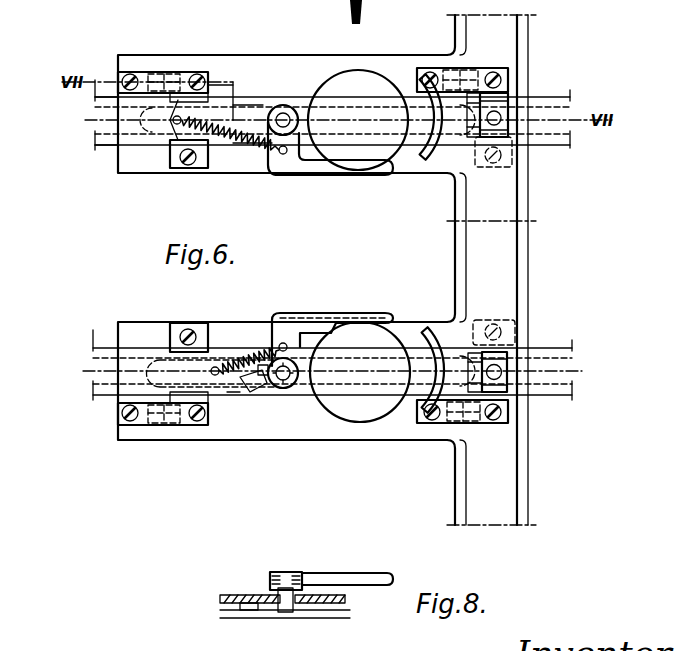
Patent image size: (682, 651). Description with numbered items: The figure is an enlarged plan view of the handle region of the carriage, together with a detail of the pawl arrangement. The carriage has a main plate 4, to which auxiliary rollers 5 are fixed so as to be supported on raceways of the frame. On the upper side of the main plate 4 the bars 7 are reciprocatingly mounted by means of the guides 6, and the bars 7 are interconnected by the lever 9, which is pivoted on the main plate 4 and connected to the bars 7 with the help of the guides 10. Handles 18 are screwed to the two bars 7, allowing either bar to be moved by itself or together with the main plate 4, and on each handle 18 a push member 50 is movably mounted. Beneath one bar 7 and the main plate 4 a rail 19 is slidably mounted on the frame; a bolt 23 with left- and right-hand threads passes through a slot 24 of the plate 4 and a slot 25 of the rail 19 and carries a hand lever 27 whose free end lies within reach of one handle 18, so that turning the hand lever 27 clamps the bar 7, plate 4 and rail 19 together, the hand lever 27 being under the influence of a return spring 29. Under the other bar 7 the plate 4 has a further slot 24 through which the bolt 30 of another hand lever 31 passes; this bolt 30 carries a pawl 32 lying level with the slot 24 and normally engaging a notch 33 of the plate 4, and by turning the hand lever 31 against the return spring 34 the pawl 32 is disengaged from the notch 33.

In FIG. 6, the main plate 4 is at (142, 171).
In FIG. 6, the auxiliary rollers 5 is at (171, 80).
In FIG. 6, the guides 6 is at (537, 317).
In FIG. 6, the bars 7 is at (546, 97).
In FIG. 8, the bars 7 is at (232, 595).
In FIG. 6, the lever 9 is at (514, 197).
In FIG. 6, the guides 10 is at (475, 127).
In FIG. 6, the handles 18 is at (374, 72).
In FIG. 8, the rail 19 is at (285, 613).
In FIG. 6, the bolt 23 is at (284, 106).
In FIG. 6, the slot 24 is at (251, 101).
In FIG. 8, the slot 24 is at (323, 605).
In FIG. 6, the slot 25 is at (106, 141).
In FIG. 6, the hand lever 27 is at (387, 176).
In FIG. 6, the return spring 29 is at (234, 144).
In FIG. 6, the bolt 30 is at (290, 385).
In FIG. 8, the bolt 30 is at (287, 572).
In FIG. 6, the hand lever 31 is at (321, 313).
In FIG. 8, the hand lever 31 is at (306, 573).
In FIG. 6, the pawl 32 is at (264, 376).
In FIG. 8, the pawl 32 is at (260, 606).
In FIG. 6, the notch 33 is at (255, 393).
In FIG. 6, the return spring 34 is at (257, 350).
In FIG. 6, the push member 50 is at (421, 163).